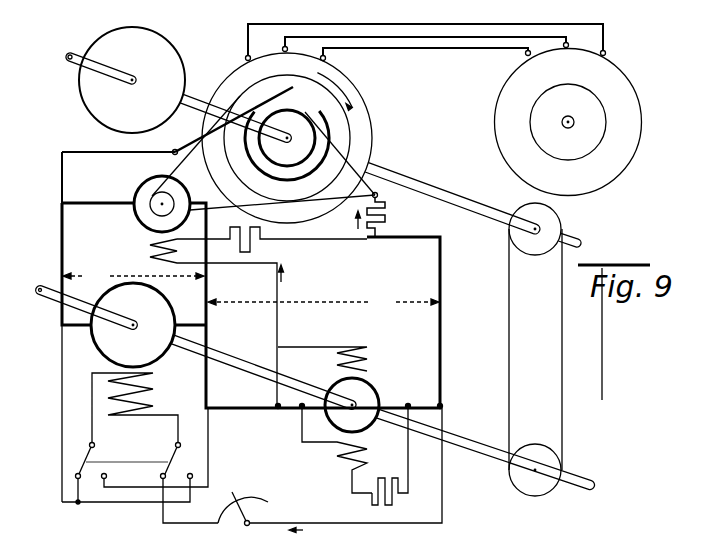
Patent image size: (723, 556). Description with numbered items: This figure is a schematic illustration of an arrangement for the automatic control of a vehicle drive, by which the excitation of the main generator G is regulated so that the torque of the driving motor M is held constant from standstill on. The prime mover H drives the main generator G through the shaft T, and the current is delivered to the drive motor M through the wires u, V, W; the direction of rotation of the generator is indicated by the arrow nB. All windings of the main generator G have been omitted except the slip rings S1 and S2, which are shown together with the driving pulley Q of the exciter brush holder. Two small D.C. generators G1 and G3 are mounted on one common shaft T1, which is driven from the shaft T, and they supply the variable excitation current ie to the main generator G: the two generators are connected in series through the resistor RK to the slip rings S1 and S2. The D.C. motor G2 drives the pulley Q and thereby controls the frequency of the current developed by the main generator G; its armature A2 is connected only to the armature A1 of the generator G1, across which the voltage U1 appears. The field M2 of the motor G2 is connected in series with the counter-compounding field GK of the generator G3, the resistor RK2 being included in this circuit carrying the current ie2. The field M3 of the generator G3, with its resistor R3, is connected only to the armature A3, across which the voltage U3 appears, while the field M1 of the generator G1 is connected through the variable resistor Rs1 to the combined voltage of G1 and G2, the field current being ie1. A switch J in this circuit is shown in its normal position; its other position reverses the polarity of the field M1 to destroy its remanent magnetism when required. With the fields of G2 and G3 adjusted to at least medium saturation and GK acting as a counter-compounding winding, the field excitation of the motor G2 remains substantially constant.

The prime mover H is at (173, 62).
The driving pulley Q is at (248, 100).
The main generator G is at (368, 125).
The slip ring S1 is at (251, 140).
The slip ring S2 is at (268, 152).
The wire u is at (419, 42).
The wire V is at (419, 43).
The wire W is at (418, 52).
The rotation speed arrow nB is at (334, 92).
The drive motor M is at (624, 80).
The shaft T is at (405, 182).
The resistor RK is at (388, 215).
The excitation current ie is at (352, 220).
The resistor RK2 is at (272, 238).
The armature A2 is at (148, 183).
The D.C. motor G2 is at (139, 211).
The field M2 is at (201, 322).
The voltage U1 is at (133, 276).
The D.C. generator G1 is at (105, 325).
The armature A1 is at (172, 309).
The shaft T1 is at (317, 389).
The excitation current ie2 is at (289, 277).
The voltage U3 is at (323, 302).
The counter compounding field GK is at (333, 359).
The armature A3 is at (372, 394).
The D.C. generator G3 is at (352, 405).
The field M3 is at (344, 449).
The resistor R3 is at (391, 460).
The field M1 is at (135, 407).
The switch J is at (140, 465).
The variable resistor Rs1 is at (243, 502).
The excitation current ie1 is at (346, 473).